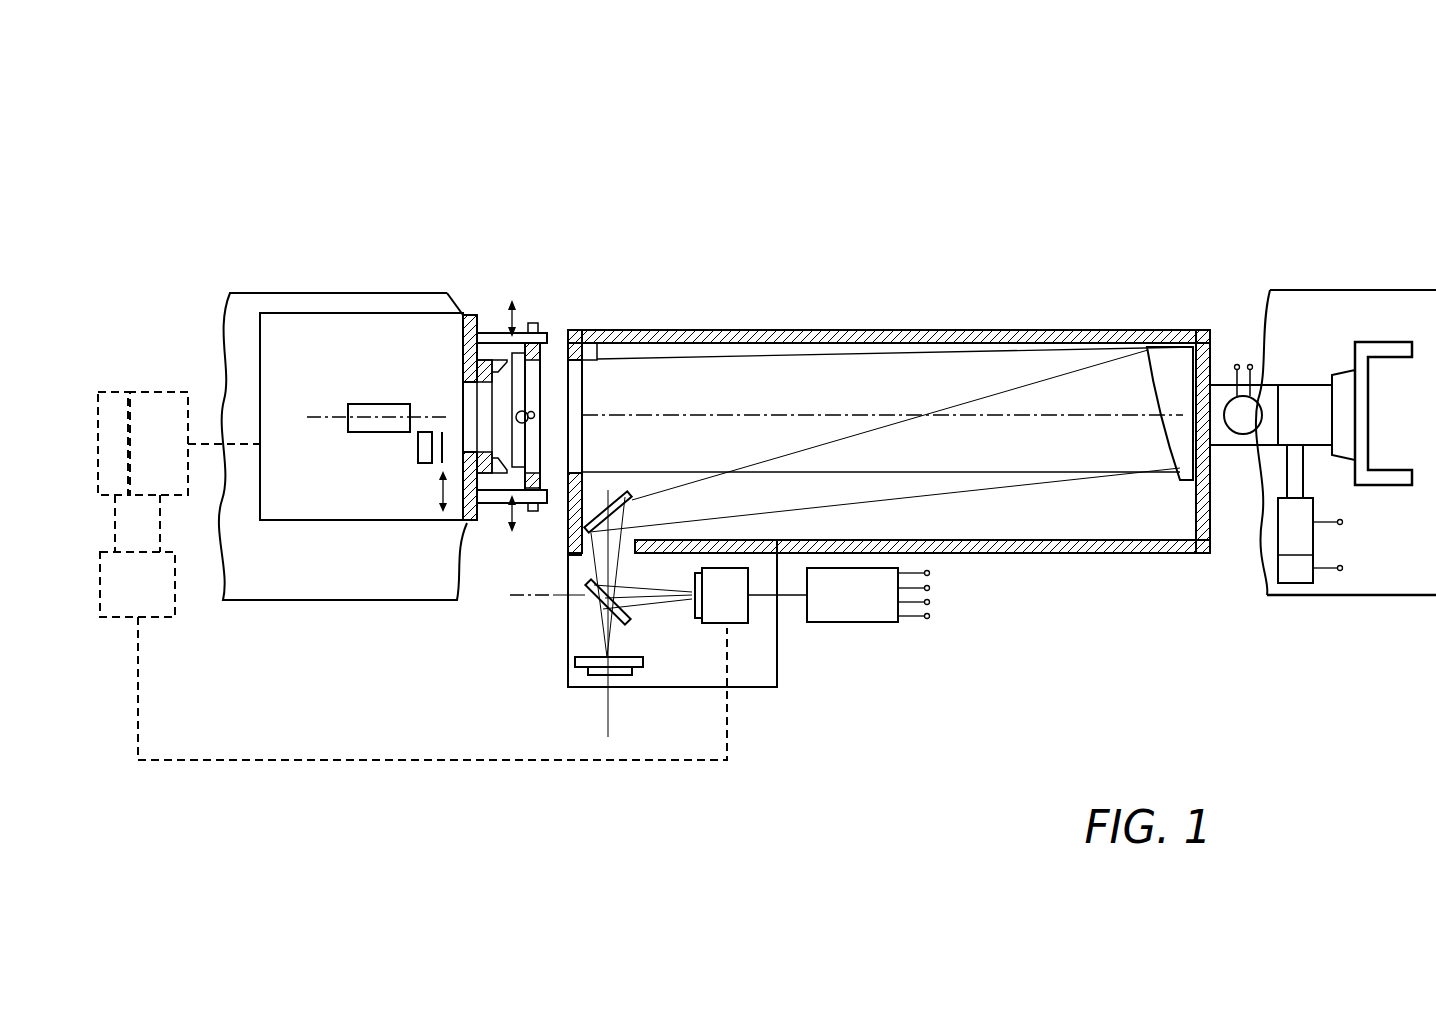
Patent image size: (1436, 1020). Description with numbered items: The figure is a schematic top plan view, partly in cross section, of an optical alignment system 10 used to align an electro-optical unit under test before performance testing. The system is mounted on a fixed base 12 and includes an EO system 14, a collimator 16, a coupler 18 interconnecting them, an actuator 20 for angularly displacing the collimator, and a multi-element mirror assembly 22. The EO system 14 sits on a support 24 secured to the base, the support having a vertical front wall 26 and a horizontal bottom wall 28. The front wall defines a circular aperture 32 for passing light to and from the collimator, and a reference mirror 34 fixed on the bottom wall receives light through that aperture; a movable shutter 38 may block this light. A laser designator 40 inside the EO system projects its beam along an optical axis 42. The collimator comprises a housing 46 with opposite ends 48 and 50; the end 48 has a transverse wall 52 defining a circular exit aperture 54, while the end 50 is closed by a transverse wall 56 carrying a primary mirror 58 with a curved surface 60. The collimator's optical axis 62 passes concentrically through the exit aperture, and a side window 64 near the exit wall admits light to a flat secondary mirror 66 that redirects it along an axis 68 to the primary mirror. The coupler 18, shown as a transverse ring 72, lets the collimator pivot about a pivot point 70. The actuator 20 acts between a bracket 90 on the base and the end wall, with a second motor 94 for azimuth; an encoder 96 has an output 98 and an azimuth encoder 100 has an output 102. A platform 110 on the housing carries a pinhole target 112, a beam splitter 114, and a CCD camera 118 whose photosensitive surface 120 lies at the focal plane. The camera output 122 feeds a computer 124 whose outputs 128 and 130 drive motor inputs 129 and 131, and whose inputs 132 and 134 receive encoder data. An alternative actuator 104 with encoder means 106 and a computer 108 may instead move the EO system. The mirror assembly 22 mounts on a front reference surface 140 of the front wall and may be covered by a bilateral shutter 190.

The optical alignment system 10 is at (357, 135).
The fixed base 12 is at (278, 293).
The EO system 14 is at (348, 313).
The collimator 16 is at (855, 293).
The coupler 18 is at (528, 292).
The actuator 20 is at (1205, 243).
The multi-element mirror assembly 22 is at (480, 476).
The support 24 is at (400, 522).
The front wall 26 is at (473, 317).
The bottom wall 28 is at (297, 497).
The circular aperture 32 is at (463, 398).
The reference mirror 34 is at (418, 450).
The movable shutter 38 is at (440, 468).
The laser designator 40 is at (385, 404).
The optical axis 42 is at (325, 417).
The housing 46 is at (1002, 327).
The end 48 is at (578, 330).
The end 50 is at (1193, 330).
The transverse wall 52 is at (565, 525).
The circular exit aperture 54 is at (578, 373).
The transverse wall 56 is at (1193, 527).
The primary mirror 58 is at (1160, 342).
The curved surface 60 is at (1163, 376).
The optical axis 62 is at (823, 413).
The side window 64 is at (623, 530).
The secondary mirror 66 is at (620, 487).
The axis 68 is at (612, 722).
The pivot point 70 is at (540, 407).
The transverse ring 72 is at (541, 347).
The bracket 90 is at (1383, 340).
The second motor 94 is at (1313, 540).
The encoder 96 is at (1227, 432).
The output 98 is at (1237, 364).
The azimuth encoder 100 is at (1293, 583).
The output 102 is at (1343, 568).
The actuator 104 is at (148, 390).
The encoder means 106 is at (120, 390).
The computer 108 is at (167, 617).
The platform 110 is at (580, 688).
The pinhole target 112 is at (647, 660).
The beam splitter 114 is at (590, 587).
The CCD camera 118 is at (738, 625).
The photosensitive surface 120 is at (690, 607).
The output 122 is at (787, 597).
The computer 124 is at (878, 625).
The output 128 is at (930, 573).
The input 129 is at (1250, 364).
The output 130 is at (930, 588).
The input 131 is at (1343, 522).
The input 132 is at (930, 602).
The input 134 is at (930, 616).
The front reference surface 140 is at (527, 427).
The bilateral shutter 190 is at (512, 470).